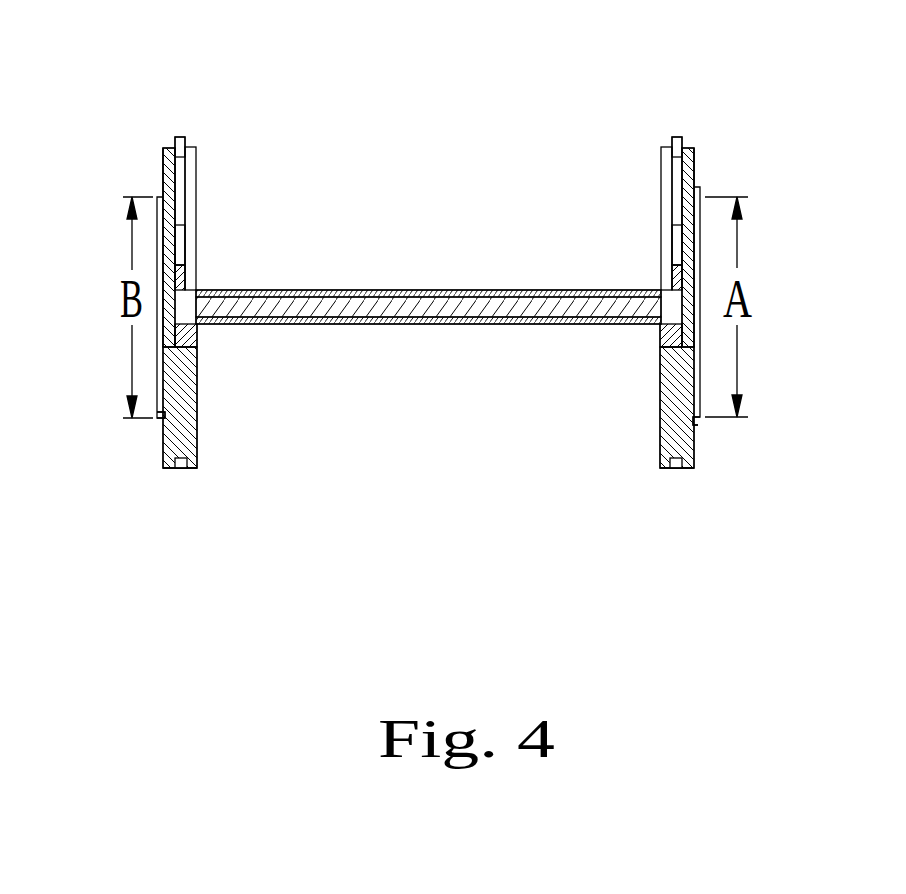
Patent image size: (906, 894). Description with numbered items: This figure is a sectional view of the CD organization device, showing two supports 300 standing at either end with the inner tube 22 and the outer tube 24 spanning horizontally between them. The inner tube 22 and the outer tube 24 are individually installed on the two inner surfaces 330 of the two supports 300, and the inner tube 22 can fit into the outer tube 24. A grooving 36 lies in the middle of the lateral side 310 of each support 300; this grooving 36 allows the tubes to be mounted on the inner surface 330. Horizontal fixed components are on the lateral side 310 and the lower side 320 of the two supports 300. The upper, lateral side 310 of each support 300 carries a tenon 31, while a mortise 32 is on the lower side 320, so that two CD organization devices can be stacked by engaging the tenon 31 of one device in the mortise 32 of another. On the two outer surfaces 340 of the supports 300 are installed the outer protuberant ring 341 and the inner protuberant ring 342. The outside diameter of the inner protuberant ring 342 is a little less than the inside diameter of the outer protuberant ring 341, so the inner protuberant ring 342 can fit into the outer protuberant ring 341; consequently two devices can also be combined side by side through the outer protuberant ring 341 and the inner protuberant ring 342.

The inner tube 22 is at (405, 300).
The outer tube 24 is at (488, 290).
The support 300 is at (228, 398).
The tenon 31 is at (179, 137).
The lateral side 310 is at (189, 147).
The mortise 32 is at (180, 470).
The lower side 320 is at (195, 470).
The inner surface 330 is at (196, 197).
The outer surface 340 is at (165, 150).
The outer protuberant ring 341 is at (697, 424).
The inner protuberant ring 342 is at (158, 421).
The grooving 36 is at (182, 238).